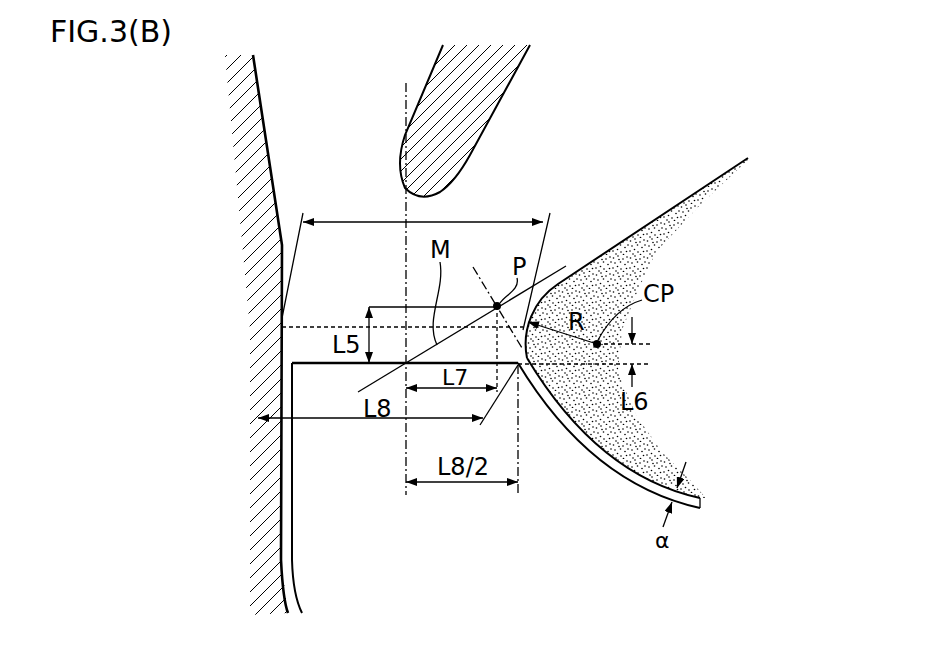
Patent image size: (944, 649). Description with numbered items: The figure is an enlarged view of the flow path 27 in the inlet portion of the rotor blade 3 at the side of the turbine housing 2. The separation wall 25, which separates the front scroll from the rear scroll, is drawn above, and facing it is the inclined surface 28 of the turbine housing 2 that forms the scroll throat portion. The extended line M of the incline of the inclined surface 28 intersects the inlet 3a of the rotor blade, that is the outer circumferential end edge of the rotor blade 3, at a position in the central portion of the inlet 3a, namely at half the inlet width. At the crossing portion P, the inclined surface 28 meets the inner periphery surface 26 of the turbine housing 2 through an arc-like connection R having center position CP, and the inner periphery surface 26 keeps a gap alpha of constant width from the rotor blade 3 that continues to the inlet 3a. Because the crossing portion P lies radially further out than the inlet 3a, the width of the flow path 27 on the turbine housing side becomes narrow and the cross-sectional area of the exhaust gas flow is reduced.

The turbine housing 2 is at (713, 181).
The rotor blade 3 is at (313, 477).
The inlet of the rotor blade 3a is at (313, 364).
The separation wall 25 is at (503, 110).
The inner periphery surface 26 is at (625, 482).
The flow path 27 is at (416, 261).
The inclined surface 28 is at (590, 256).